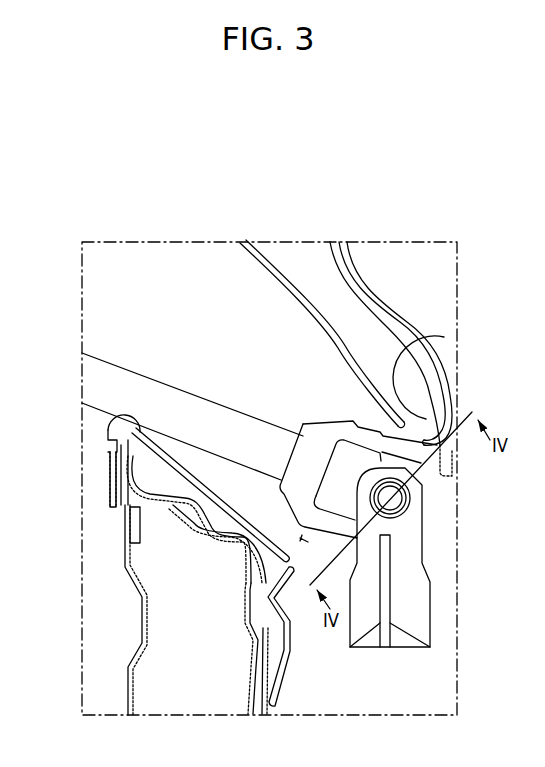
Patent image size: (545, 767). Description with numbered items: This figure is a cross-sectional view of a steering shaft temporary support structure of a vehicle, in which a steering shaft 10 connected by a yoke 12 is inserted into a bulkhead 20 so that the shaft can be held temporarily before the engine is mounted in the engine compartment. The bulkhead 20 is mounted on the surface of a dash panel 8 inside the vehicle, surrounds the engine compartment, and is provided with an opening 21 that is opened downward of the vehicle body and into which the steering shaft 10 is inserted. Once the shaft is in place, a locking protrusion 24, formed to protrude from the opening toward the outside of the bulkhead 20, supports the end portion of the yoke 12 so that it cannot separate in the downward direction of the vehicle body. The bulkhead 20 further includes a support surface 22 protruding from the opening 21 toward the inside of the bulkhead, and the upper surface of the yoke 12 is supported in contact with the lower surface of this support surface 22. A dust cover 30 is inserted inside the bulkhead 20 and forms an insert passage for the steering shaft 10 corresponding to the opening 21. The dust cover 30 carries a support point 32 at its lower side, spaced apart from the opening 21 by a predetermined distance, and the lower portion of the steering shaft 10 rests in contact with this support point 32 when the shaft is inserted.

The dash panel 8 is at (142, 624).
The steering shaft 10 is at (112, 356).
The yoke 12 is at (358, 427).
The bulkhead 20 is at (369, 281).
The opening 21 is at (300, 543).
The support surface 22 is at (417, 343).
The locking protrusion 24 is at (447, 467).
The dust cover 30 is at (266, 262).
The support point 32 is at (106, 430).